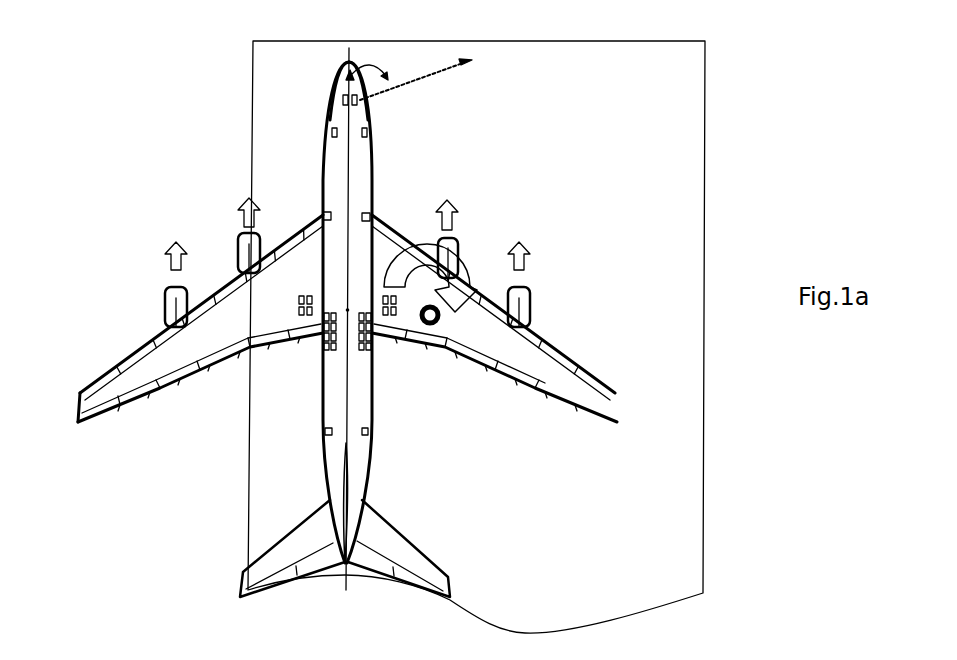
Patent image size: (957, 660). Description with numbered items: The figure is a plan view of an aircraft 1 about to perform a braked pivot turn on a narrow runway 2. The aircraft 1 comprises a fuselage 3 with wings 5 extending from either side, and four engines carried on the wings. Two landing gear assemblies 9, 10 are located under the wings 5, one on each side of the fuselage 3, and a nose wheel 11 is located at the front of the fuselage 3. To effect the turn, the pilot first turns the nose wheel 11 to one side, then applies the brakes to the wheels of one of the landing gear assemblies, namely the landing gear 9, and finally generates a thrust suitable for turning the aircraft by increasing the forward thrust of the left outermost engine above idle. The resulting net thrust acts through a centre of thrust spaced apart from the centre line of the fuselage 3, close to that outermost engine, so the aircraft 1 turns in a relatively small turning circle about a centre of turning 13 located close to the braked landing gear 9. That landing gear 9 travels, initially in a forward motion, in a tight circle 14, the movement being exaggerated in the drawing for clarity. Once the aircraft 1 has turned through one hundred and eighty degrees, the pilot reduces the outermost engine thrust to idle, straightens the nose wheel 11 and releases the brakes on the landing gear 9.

The aircraft 1 is at (337, 318).
The narrow runway 2 is at (616, 561).
The fuselage 3 is at (348, 449).
The wings 5 is at (190, 352).
The landing gear assembly 9 is at (397, 337).
The landing gear assembly 10 is at (294, 328).
The nose wheel 11 is at (320, 87).
The centre of turning 13 is at (449, 339).
The tight circle 14 is at (454, 238).